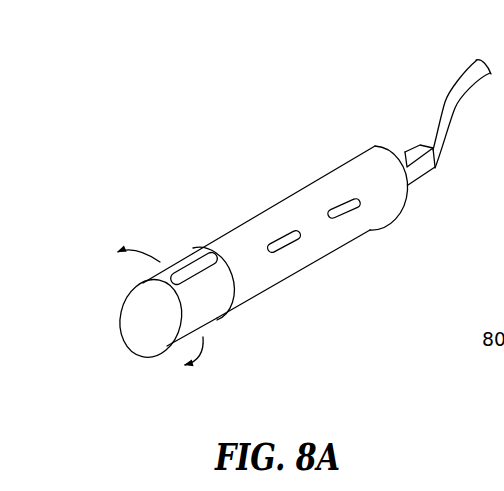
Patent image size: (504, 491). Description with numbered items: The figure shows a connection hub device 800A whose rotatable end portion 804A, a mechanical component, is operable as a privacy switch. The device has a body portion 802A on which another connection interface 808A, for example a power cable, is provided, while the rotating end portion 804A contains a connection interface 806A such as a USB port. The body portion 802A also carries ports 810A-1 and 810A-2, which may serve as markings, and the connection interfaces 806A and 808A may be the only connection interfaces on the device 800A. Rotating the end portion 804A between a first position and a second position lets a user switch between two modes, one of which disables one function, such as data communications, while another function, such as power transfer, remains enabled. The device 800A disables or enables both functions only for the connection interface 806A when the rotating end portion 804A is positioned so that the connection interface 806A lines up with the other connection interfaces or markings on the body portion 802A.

The connection hub device 800A is at (269, 72).
The body portion 802A is at (298, 191).
The rotatable end portion 804A is at (130, 298).
The connection interface 806A is at (188, 262).
The connection interface 808A is at (445, 92).
The port 810A-1 is at (287, 251).
The port 810A-2 is at (348, 217).